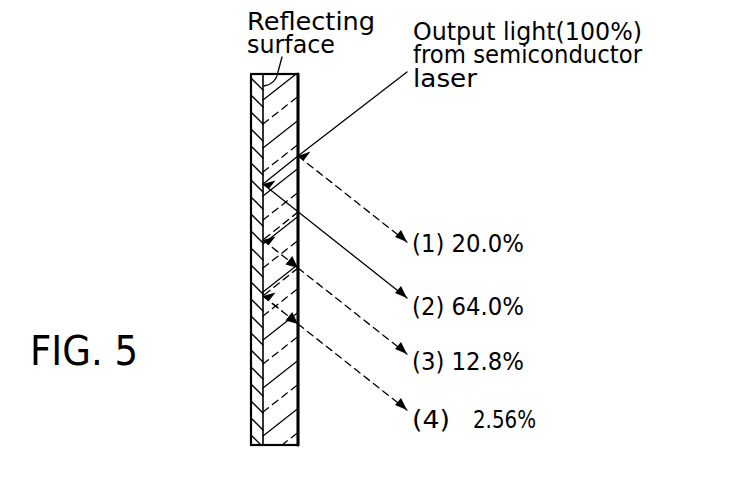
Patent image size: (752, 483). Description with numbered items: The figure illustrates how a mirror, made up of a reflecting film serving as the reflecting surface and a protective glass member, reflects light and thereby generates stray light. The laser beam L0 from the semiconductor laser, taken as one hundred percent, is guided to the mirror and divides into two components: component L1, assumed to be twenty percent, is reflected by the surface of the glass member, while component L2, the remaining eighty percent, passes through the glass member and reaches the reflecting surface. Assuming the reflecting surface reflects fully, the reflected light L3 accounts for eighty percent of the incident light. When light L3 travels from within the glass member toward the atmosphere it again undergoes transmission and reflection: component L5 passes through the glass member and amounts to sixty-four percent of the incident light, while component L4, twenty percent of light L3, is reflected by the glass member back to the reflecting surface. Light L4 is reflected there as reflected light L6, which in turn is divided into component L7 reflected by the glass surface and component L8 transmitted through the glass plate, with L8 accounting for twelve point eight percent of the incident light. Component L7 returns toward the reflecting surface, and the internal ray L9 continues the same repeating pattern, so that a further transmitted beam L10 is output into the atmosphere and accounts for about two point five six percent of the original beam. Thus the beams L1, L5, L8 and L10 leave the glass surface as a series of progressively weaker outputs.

The laser beam L0 is at (363, 105).
The component reflected by the surface of the glass member L1 is at (357, 201).
The component passing through the glass member L2 is at (272, 177).
The reflected light reflected by the reflecting surface L3 is at (280, 211).
The component reflected by the glass member L4 is at (299, 258).
The component passing through the glass member L5 is at (391, 286).
The reflected light L6 is at (266, 256).
The component reflected by the glass surface L7 is at (299, 314).
The component transmitted through the glass plate L8 is at (393, 343).
The third internally reflected light L9 is at (272, 306).
The transmitted light beam from the glass surface L10 is at (345, 364).